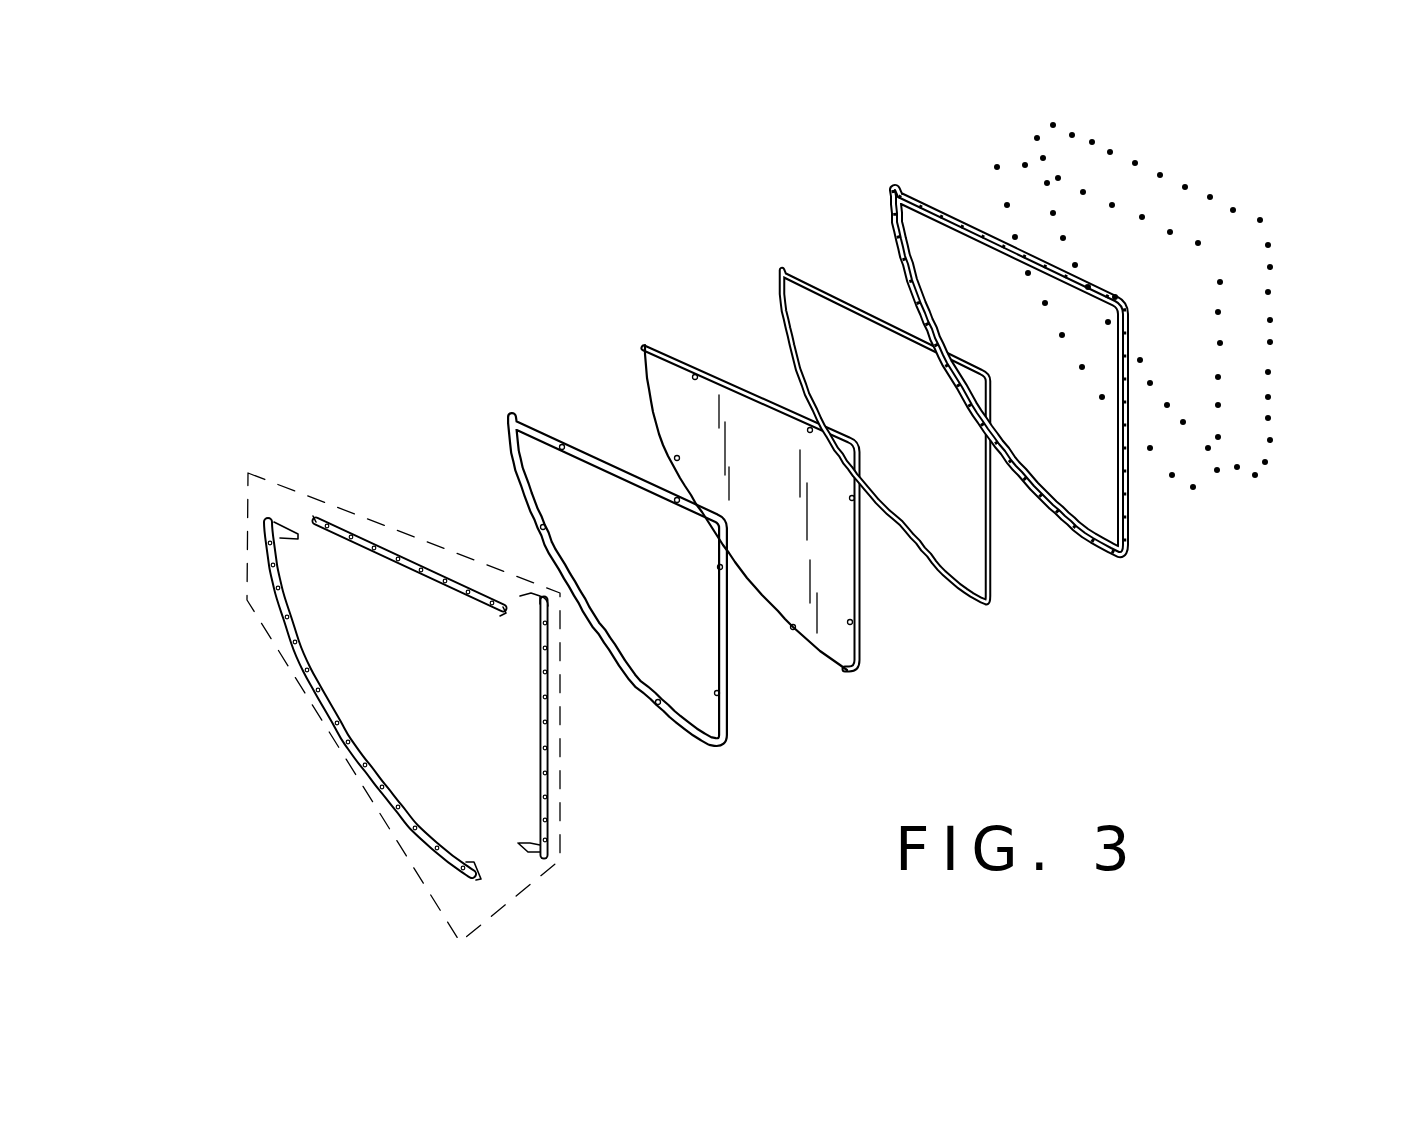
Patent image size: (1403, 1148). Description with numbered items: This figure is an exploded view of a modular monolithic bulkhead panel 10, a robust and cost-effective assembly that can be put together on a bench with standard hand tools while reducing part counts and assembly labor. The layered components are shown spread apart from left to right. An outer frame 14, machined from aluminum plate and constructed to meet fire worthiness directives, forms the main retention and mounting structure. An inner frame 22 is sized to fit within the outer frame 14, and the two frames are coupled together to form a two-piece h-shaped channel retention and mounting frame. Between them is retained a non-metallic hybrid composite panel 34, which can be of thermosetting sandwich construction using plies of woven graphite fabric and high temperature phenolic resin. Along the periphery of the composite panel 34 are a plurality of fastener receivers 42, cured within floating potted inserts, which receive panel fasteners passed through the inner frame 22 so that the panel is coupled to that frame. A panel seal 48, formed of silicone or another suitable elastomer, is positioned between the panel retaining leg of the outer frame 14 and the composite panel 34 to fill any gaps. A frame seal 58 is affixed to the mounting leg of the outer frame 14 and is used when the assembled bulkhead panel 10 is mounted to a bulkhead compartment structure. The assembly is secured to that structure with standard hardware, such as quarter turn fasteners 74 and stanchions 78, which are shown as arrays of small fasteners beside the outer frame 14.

The modular monolithic bulkhead panel 10 is at (685, 242).
The outer frame 14 is at (1108, 547).
The inner frame 22 is at (707, 748).
The non-metallic hybrid composite panel 34 is at (846, 672).
The fastener receivers 42 is at (699, 373).
The panel seal 48 is at (983, 604).
The frame seal 58 is at (262, 472).
The quarter turn fasteners 74 is at (1093, 140).
The stanchions 78 is at (997, 165).